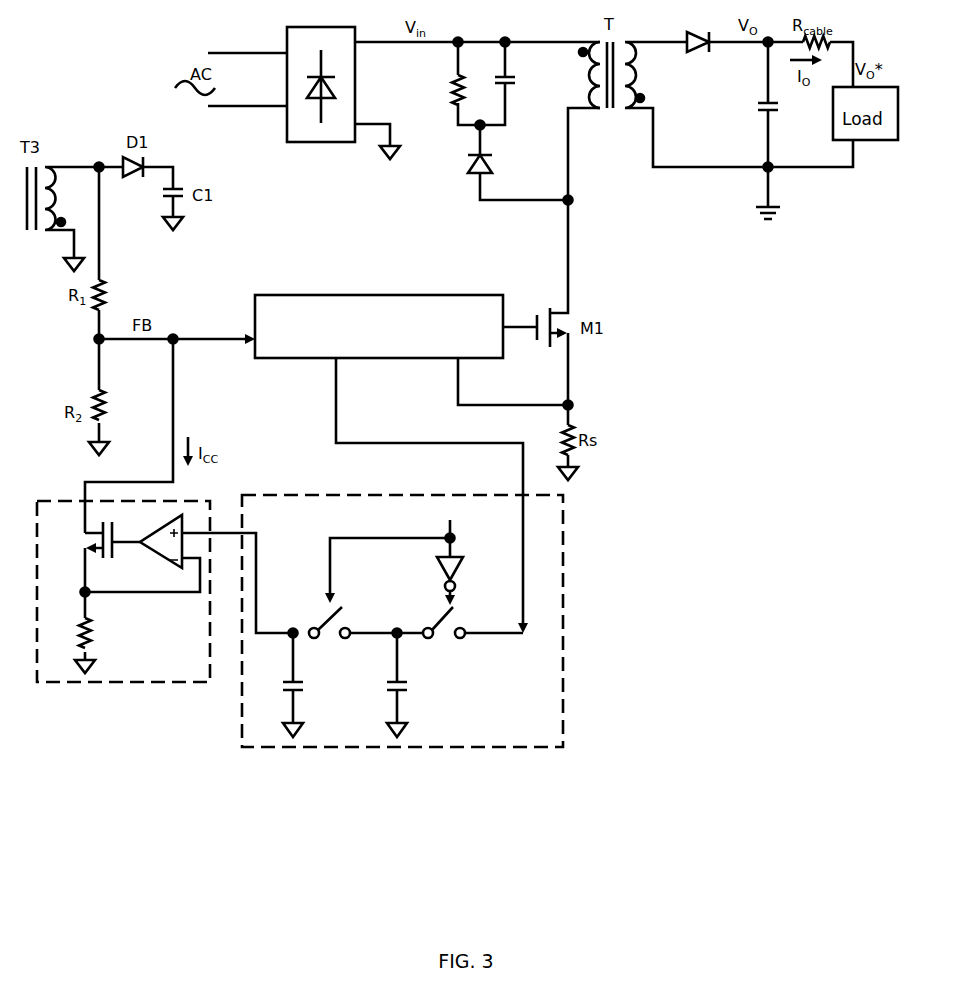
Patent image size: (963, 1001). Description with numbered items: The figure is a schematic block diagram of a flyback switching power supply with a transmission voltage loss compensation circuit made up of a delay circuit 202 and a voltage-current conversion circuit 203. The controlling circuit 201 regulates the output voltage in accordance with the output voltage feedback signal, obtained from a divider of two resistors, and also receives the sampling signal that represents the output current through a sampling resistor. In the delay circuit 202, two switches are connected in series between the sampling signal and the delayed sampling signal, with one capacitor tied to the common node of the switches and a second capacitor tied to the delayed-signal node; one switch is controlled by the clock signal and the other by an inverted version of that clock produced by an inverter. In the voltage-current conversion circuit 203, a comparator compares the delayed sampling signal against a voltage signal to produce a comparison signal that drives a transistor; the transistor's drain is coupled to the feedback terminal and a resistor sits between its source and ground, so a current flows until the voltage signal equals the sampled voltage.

The controlling circuit 201 is at (379, 326).
The delay circuit 202 is at (402, 621).
The voltage-current conversion circuit 203 is at (165, 591).